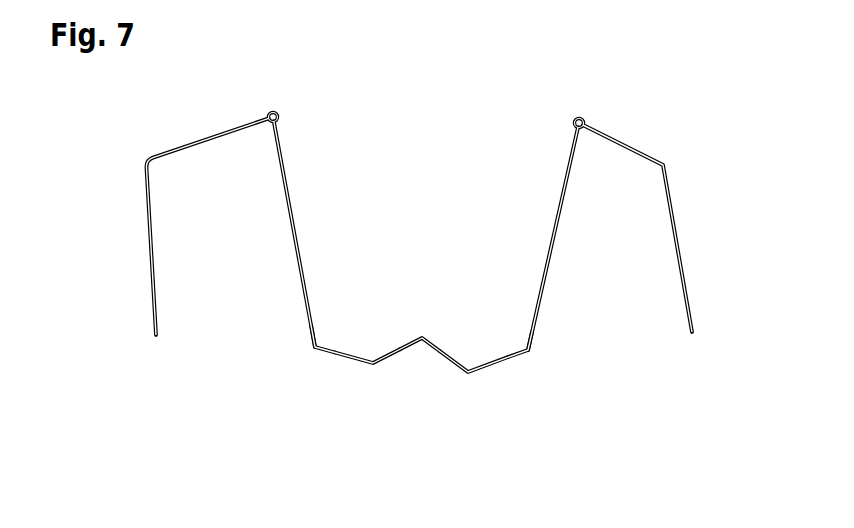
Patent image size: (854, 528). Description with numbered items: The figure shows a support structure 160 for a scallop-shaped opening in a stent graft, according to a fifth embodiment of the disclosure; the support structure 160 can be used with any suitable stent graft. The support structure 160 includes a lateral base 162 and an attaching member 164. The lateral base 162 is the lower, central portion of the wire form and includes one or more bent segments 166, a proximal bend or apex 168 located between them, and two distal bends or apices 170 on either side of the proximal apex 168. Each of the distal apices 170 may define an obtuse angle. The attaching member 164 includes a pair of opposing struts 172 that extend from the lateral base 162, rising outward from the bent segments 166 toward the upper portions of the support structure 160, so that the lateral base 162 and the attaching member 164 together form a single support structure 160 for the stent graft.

The support structure 160 is at (694, 121).
The lateral base 162 is at (424, 373).
The attaching member 164 is at (185, 130).
The bent segments 166 is at (315, 351).
The proximal bend or apex 168 is at (422, 333).
The distal bends or apices 170 is at (373, 367).
The opposing struts 172 is at (321, 226).